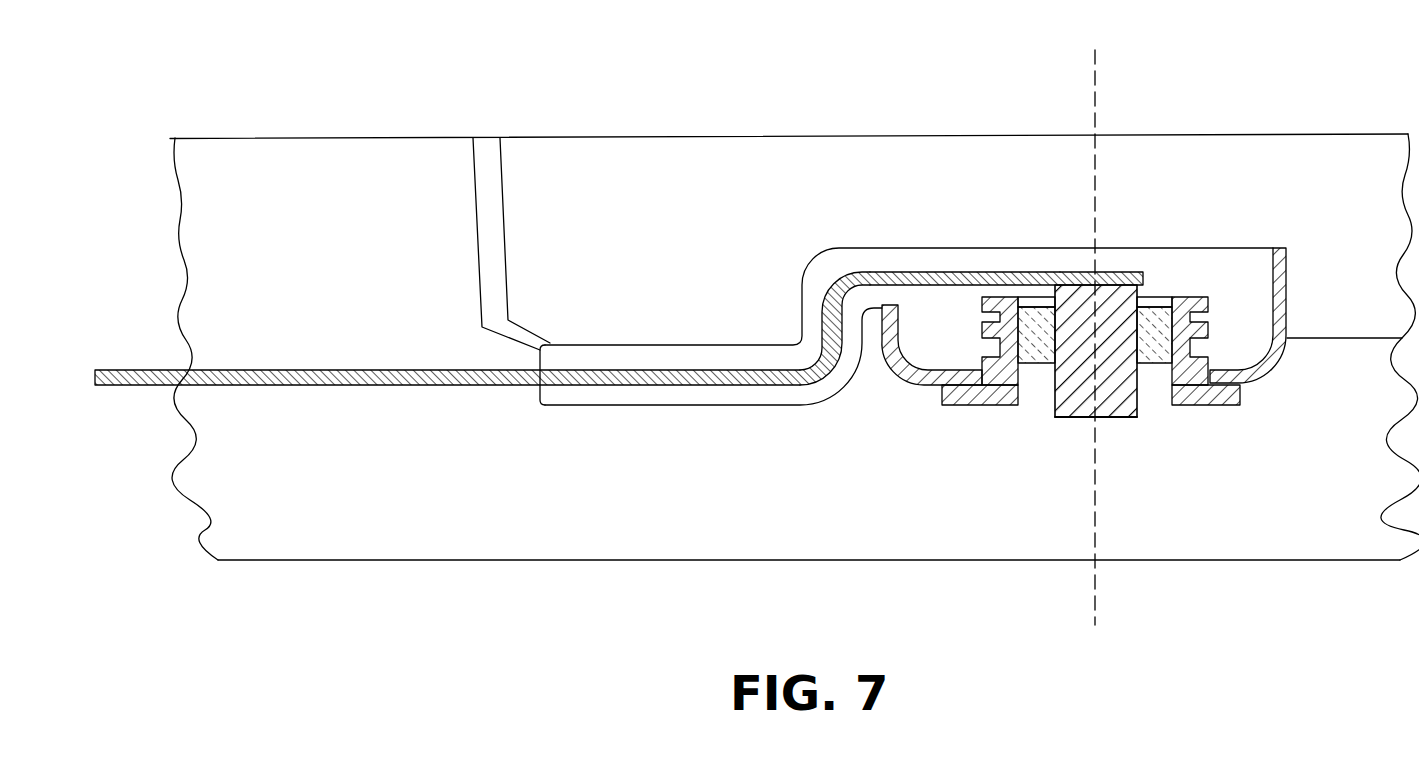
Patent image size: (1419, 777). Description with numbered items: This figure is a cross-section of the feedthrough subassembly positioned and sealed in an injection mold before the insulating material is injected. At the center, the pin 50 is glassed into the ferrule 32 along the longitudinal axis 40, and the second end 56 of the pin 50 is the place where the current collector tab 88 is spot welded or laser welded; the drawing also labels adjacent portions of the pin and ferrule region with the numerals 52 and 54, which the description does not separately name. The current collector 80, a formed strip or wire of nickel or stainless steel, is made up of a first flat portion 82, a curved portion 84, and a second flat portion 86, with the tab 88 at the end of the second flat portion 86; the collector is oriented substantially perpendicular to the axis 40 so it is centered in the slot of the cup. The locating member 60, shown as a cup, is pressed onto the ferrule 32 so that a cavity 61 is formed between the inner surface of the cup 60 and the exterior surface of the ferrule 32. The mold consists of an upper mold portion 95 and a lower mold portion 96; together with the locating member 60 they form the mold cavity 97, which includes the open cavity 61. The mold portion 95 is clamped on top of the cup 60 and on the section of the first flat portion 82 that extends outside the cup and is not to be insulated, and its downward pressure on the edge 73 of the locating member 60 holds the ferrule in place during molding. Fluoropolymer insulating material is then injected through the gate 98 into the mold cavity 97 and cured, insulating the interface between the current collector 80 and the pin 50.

The ferrule 32 is at (1242, 394).
The longitudinal axis 40 is at (1095, 155).
The pin 50 is at (1113, 418).
The threaded boss 52 is at (1030, 392).
The bolt end 54 is at (1078, 417).
The second end 56 is at (1095, 335).
The locating member 60 is at (1284, 311).
The cavity 61 is at (1250, 283).
The edge 73 is at (1282, 250).
The current collector 80 is at (643, 326).
The first flat portion 82 is at (375, 386).
The curved portion 84 is at (822, 362).
The second flat portion 86 is at (960, 272).
The current collector tab 88 is at (1105, 272).
The mold portion 95 is at (727, 150).
The mold portion 96 is at (668, 540).
The mold cavity 97 is at (612, 350).
The gate 98 is at (503, 183).